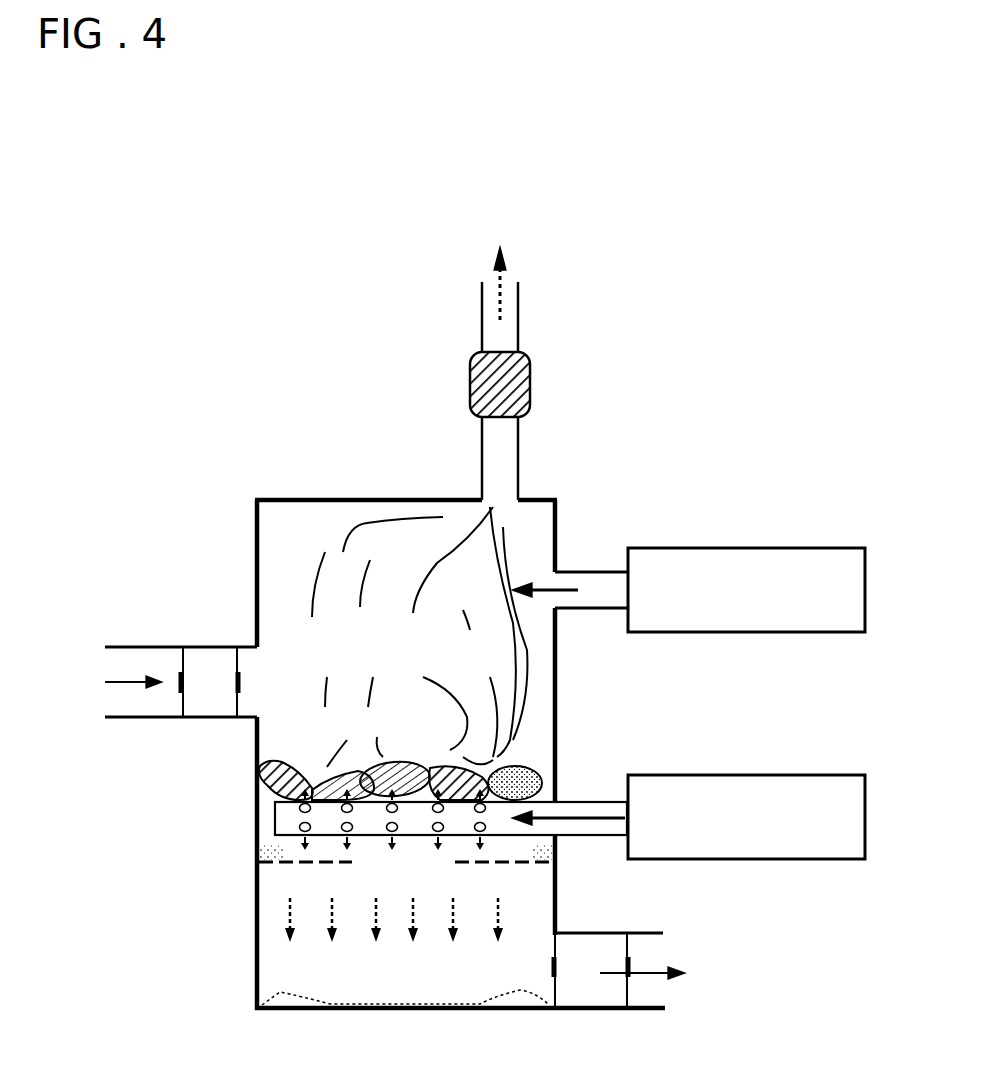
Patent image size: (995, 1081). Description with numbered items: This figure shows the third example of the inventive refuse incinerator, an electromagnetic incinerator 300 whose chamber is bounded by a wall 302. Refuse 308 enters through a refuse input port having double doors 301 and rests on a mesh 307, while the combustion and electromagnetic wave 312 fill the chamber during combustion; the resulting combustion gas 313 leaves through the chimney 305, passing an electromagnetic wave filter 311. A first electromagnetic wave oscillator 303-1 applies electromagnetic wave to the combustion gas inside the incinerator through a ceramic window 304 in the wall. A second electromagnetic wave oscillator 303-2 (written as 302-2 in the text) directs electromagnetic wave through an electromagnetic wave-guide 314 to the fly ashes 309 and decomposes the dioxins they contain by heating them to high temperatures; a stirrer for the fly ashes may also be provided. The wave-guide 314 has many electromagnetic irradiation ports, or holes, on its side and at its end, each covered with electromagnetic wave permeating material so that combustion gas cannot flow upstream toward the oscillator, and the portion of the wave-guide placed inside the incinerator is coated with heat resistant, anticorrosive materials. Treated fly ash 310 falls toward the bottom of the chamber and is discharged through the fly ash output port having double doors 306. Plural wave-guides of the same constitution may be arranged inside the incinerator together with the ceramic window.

The electromagnetic incinerator 300 is at (116, 297).
The refuse input port having double doors 301 is at (128, 633).
The wall 302 is at (557, 683).
The electromagnetic wave oscillator 303-1 is at (650, 548).
The electromagnetic wave oscillator 303-2 is at (640, 775).
The ceramic window 304 is at (547, 577).
The chimney 305 is at (481, 438).
The fly ash output port having double doors 306 is at (592, 1000).
The mesh 307 is at (556, 869).
The refuse 308 is at (400, 751).
The fly ashes 309 is at (258, 857).
The fly ash 310 is at (265, 1004).
The electromagnetic wave filter 311 is at (533, 371).
The combustion gas 312 is at (397, 637).
The combustion gas 313 is at (523, 260).
The electromagnetic wave-guide 314 is at (268, 818).